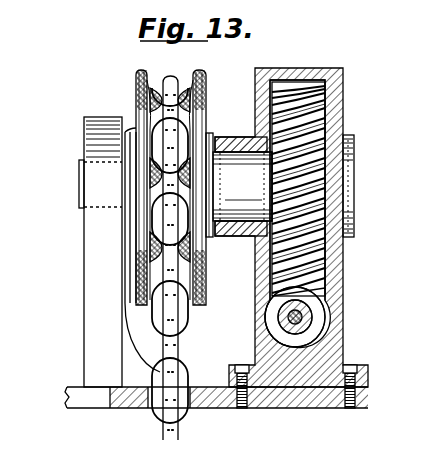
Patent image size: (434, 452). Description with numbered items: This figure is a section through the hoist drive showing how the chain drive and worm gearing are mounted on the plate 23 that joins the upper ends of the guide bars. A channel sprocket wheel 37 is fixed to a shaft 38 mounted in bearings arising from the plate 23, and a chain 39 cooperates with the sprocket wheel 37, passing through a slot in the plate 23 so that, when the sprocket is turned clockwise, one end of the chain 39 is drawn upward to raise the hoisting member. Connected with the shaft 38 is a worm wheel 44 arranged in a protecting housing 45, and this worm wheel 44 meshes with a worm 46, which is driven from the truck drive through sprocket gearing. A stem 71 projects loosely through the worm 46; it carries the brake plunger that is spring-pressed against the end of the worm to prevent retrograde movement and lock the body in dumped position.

The plate 23 is at (330, 404).
The channel sprocket wheel 37 is at (195, 75).
The shaft 38 is at (79, 190).
The chain 39 is at (181, 318).
The worm wheel 44 is at (300, 118).
The protecting housing 45 is at (345, 72).
The worm 46 is at (322, 300).
The stem 71 is at (305, 321).